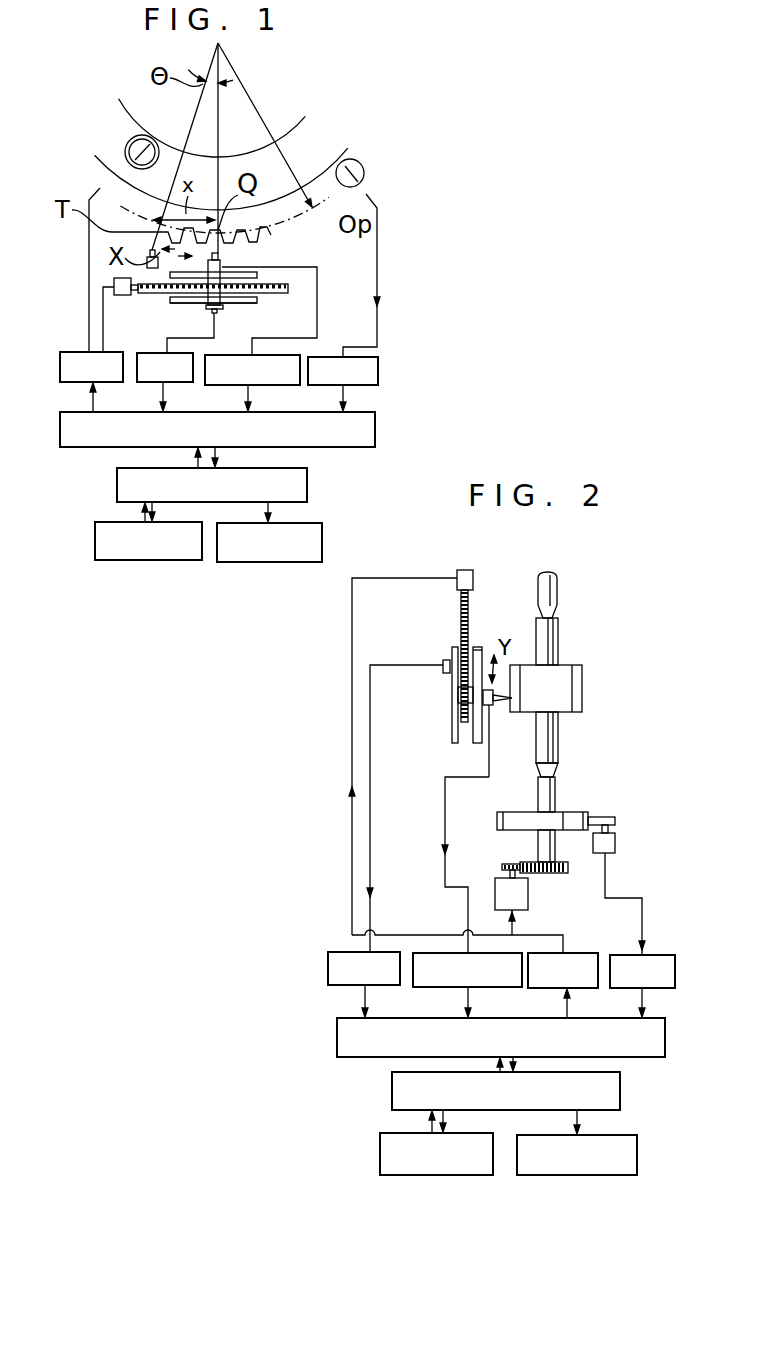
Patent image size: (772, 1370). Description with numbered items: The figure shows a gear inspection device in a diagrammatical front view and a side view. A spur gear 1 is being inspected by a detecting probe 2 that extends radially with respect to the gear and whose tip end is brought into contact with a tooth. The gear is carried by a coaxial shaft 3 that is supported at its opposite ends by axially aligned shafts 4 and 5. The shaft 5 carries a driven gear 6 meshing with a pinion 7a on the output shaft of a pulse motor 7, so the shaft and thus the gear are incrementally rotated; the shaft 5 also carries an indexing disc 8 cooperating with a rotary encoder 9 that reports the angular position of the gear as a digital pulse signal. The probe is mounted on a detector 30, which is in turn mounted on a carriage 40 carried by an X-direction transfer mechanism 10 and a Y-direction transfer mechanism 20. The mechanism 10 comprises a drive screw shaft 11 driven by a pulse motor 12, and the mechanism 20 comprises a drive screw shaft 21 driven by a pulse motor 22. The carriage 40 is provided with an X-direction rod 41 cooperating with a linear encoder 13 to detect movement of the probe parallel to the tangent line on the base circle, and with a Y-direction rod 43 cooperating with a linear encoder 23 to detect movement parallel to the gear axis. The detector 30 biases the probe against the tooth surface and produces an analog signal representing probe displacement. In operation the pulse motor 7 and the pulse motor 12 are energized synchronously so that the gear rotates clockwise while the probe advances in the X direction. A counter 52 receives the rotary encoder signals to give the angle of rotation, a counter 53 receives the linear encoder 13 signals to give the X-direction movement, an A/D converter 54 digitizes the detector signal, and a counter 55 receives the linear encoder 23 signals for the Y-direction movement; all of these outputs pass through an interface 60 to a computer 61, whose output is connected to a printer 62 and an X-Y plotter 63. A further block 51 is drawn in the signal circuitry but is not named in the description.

In FIG. 1, the spur gear 1 is at (273, 238).
In FIG. 2, the spur gear 1 is at (583, 683).
In FIG. 1, the detecting probe 2 is at (220, 249).
In FIG. 2, the detecting probe 2 is at (500, 703).
In FIG. 2, the shaft 3 is at (559, 640).
In FIG. 2, the shaft 4 is at (558, 588).
In FIG. 2, the shaft 5 is at (557, 783).
In FIG. 1, the driven gear 6 is at (296, 127).
In FIG. 2, the driven gear 6 is at (568, 868).
In FIG. 1, the pulse motor 7 is at (126, 142).
In FIG. 2, the pulse motor 7 is at (494, 890).
In FIG. 2, the pinion 7a is at (512, 863).
In FIG. 1, the indexing disc 8 is at (358, 143).
In FIG. 2, the indexing disc 8 is at (583, 810).
In FIG. 1, the rotary encoder 9 is at (364, 173).
In FIG. 2, the rotary encoder 9 is at (616, 842).
In FIG. 1, the X-direction transfer mechanism 10 is at (176, 303).
In FIG. 1, the drive screw shaft 11 is at (289, 289).
In FIG. 1, the pulse motor 12 is at (129, 307).
In FIG. 1, the linear encoder 13 is at (222, 309).
In FIG. 2, the Y-direction transfer mechanism 20 is at (446, 697).
In FIG. 2, the drive screw shaft 21 is at (469, 622).
In FIG. 2, the pulse motor 22 is at (474, 572).
In FIG. 2, the linear encoder 23 is at (444, 660).
In FIG. 1, the detector 30 is at (258, 273).
In FIG. 2, the detector 30 is at (487, 737).
In FIG. 1, the carriage 40 is at (317, 268).
In FIG. 2, the carriage 40 is at (478, 655).
In FIG. 1, the X-direction rod 41 is at (258, 301).
In FIG. 2, the Y-direction rod 43 is at (452, 738).
In FIG. 1, the motor drive circuit 51 is at (75, 352).
In FIG. 2, the motor drive circuit 51 is at (587, 953).
In FIG. 1, the counter 52 is at (379, 366).
In FIG. 2, the counter 52 is at (667, 955).
In FIG. 1, the counter 53 is at (154, 382).
In FIG. 1, the A/D converter 54 is at (286, 355).
In FIG. 2, the A/D converter 54 is at (460, 988).
In FIG. 2, the counter 55 is at (328, 983).
In FIG. 1, the interface 60 is at (376, 434).
In FIG. 2, the interface 60 is at (666, 1040).
In FIG. 1, the computer 61 is at (308, 488).
In FIG. 2, the computer 61 is at (621, 1092).
In FIG. 1, the printer 62 is at (165, 560).
In FIG. 2, the printer 62 is at (468, 1175).
In FIG. 1, the X-Y plotter 63 is at (282, 562).
In FIG. 2, the X-Y plotter 63 is at (610, 1175).